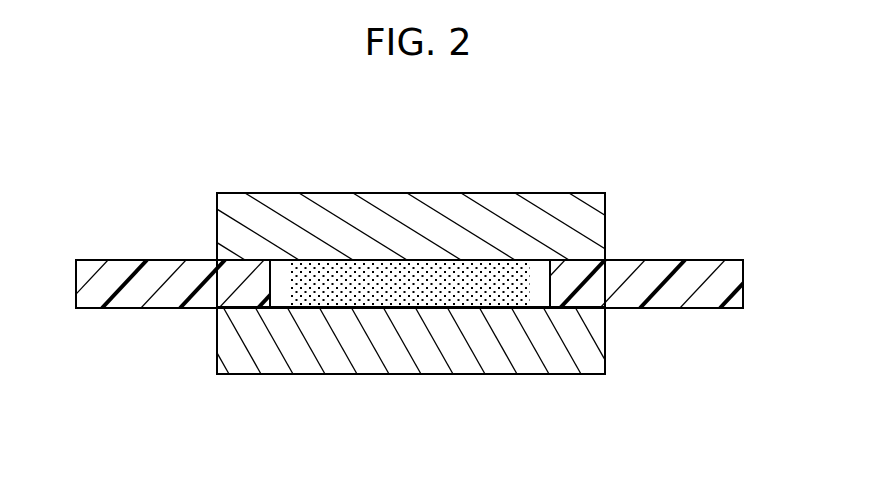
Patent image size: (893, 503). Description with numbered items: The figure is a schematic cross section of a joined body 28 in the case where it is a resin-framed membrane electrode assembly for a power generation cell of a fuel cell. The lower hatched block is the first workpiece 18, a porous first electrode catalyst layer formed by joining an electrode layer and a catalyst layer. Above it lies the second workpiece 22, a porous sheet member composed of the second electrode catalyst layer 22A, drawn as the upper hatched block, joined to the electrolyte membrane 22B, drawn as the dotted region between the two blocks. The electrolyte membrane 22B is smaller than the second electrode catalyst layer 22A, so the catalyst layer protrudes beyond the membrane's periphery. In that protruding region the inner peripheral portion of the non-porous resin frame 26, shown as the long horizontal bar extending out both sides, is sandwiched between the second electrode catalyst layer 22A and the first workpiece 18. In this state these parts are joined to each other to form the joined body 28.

The first workpiece 18 is at (371, 361).
The second workpiece 22 is at (487, 132).
The second electrode catalyst layer 22A is at (391, 235).
The electrolyte membrane 22B is at (453, 285).
The resin frame 26 is at (132, 298).
The joined body 28 is at (542, 160).